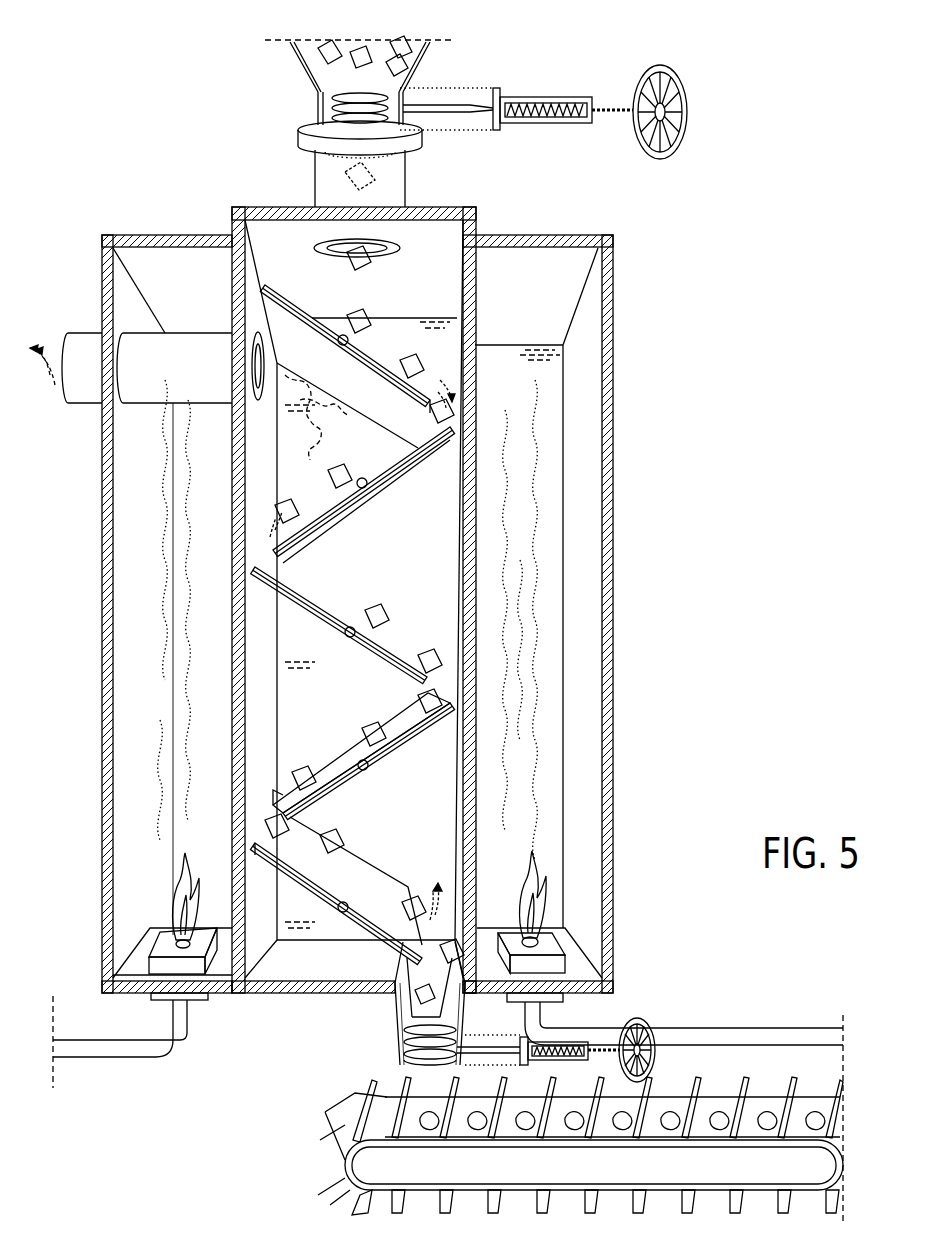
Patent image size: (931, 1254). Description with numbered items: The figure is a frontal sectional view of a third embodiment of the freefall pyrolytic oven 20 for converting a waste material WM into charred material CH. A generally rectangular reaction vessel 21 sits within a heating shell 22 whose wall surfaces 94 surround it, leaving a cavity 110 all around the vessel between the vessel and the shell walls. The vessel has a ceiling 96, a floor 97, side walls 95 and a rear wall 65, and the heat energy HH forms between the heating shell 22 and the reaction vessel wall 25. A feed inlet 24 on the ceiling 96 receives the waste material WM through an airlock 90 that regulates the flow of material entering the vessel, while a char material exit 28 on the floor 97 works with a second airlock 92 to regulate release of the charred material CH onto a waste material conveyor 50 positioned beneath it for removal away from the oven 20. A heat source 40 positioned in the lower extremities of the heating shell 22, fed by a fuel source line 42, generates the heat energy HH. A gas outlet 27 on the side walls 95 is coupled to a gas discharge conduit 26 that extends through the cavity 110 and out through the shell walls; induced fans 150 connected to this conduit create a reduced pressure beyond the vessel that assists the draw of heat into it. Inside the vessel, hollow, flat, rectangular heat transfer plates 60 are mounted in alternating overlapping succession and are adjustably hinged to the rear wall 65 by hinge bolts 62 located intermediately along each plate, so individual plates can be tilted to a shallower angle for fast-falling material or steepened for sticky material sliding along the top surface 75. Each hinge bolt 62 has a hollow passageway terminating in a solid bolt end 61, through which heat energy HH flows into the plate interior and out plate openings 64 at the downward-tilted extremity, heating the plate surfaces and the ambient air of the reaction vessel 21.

The freefall pyrolytic oven 20 is at (150, 112).
The induced fans 150 is at (38, 278).
The gas outlet 27 is at (258, 338).
The gas discharge conduit 26 is at (85, 406).
The feed inlet 24 is at (300, 138).
The waste material WM is at (417, 52).
The airlock 90 is at (522, 94).
The ceiling 96 is at (449, 207).
The reaction vessel 21 is at (482, 295).
The reaction vessel wall 25 is at (476, 323).
The heating shell 22 is at (613, 288).
The rear wall 65 is at (443, 372).
The cavity 110 is at (553, 433).
The heat energy HH is at (543, 507).
The wall surfaces 94 is at (610, 530).
The side walls 95 is at (475, 560).
The hinge bolt 62 is at (348, 634).
The plate openings 64 is at (430, 690).
The heat transfer plates 60 is at (432, 746).
The solid bolt end 61 is at (368, 772).
The top surface 75 is at (345, 745).
The heat source 40 is at (560, 938).
The floor 97 is at (270, 993).
The char material exit 28 is at (395, 1018).
The airlock 92 is at (639, 1018).
The fuel source line 42 is at (117, 1059).
The waste material conveyor 50 is at (342, 1203).
The charred material CH is at (813, 1097).